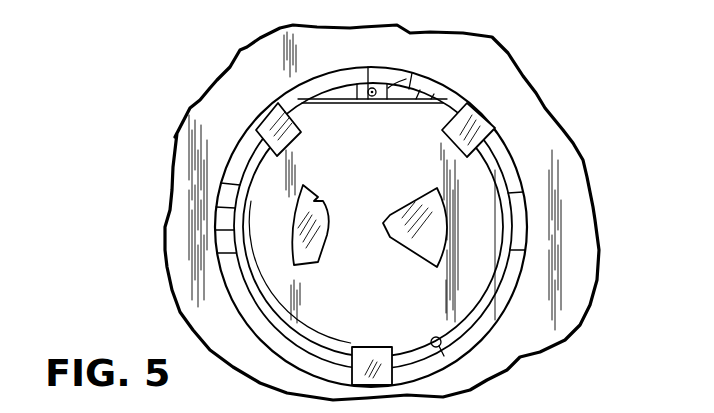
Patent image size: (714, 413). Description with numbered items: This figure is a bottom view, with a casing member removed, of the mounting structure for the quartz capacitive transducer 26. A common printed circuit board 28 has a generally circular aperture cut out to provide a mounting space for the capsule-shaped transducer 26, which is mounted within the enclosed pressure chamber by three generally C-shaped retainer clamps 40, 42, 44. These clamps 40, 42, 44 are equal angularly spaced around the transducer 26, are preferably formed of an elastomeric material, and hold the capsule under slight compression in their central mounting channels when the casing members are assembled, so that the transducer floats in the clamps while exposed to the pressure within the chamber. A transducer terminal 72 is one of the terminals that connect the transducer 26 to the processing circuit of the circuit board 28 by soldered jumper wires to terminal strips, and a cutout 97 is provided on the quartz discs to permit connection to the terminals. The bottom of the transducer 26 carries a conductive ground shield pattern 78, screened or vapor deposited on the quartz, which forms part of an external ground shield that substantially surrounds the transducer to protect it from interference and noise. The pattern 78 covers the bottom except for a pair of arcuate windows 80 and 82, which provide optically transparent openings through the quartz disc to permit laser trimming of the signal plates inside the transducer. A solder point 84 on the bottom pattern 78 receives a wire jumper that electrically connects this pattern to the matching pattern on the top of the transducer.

The quartz capacitive transducer 26 is at (520, 182).
The printed circuit board 28 is at (189, 303).
The retainer clamp 40 is at (393, 376).
The retainer clamp 42 is at (484, 118).
The retainer clamp 44 is at (265, 118).
The transducer terminal 72 is at (389, 87).
The ground shield pattern 78 is at (511, 151).
The arcuate window 80 is at (313, 199).
The arcuate window 82 is at (413, 245).
The solder point 84 is at (440, 346).
The cutout 97 is at (414, 84).